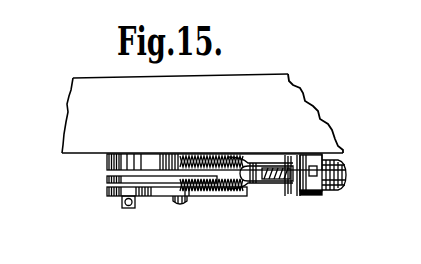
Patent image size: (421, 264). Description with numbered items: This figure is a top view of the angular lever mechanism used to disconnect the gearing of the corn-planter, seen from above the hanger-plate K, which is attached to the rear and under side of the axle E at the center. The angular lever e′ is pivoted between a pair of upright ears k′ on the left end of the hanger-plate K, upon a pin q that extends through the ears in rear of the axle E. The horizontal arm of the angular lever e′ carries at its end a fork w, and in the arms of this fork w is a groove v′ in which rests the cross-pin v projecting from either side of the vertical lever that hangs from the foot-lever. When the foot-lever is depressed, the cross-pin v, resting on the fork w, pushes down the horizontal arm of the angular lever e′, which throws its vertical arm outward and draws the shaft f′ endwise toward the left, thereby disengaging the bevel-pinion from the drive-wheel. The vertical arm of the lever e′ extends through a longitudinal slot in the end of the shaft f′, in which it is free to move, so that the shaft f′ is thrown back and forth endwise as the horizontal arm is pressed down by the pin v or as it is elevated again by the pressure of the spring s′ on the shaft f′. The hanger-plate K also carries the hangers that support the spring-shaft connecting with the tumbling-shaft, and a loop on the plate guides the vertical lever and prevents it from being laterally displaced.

The axle E is at (202, 113).
The hanger-plate K is at (122, 163).
The angular lever e′ is at (107, 179).
The upright ears k′ is at (107, 165).
The pin q is at (121, 203).
The spring s′ is at (210, 193).
The cross-pin v is at (267, 186).
The groove v′ is at (283, 186).
The fork w is at (290, 188).
The shaft f′ is at (347, 178).